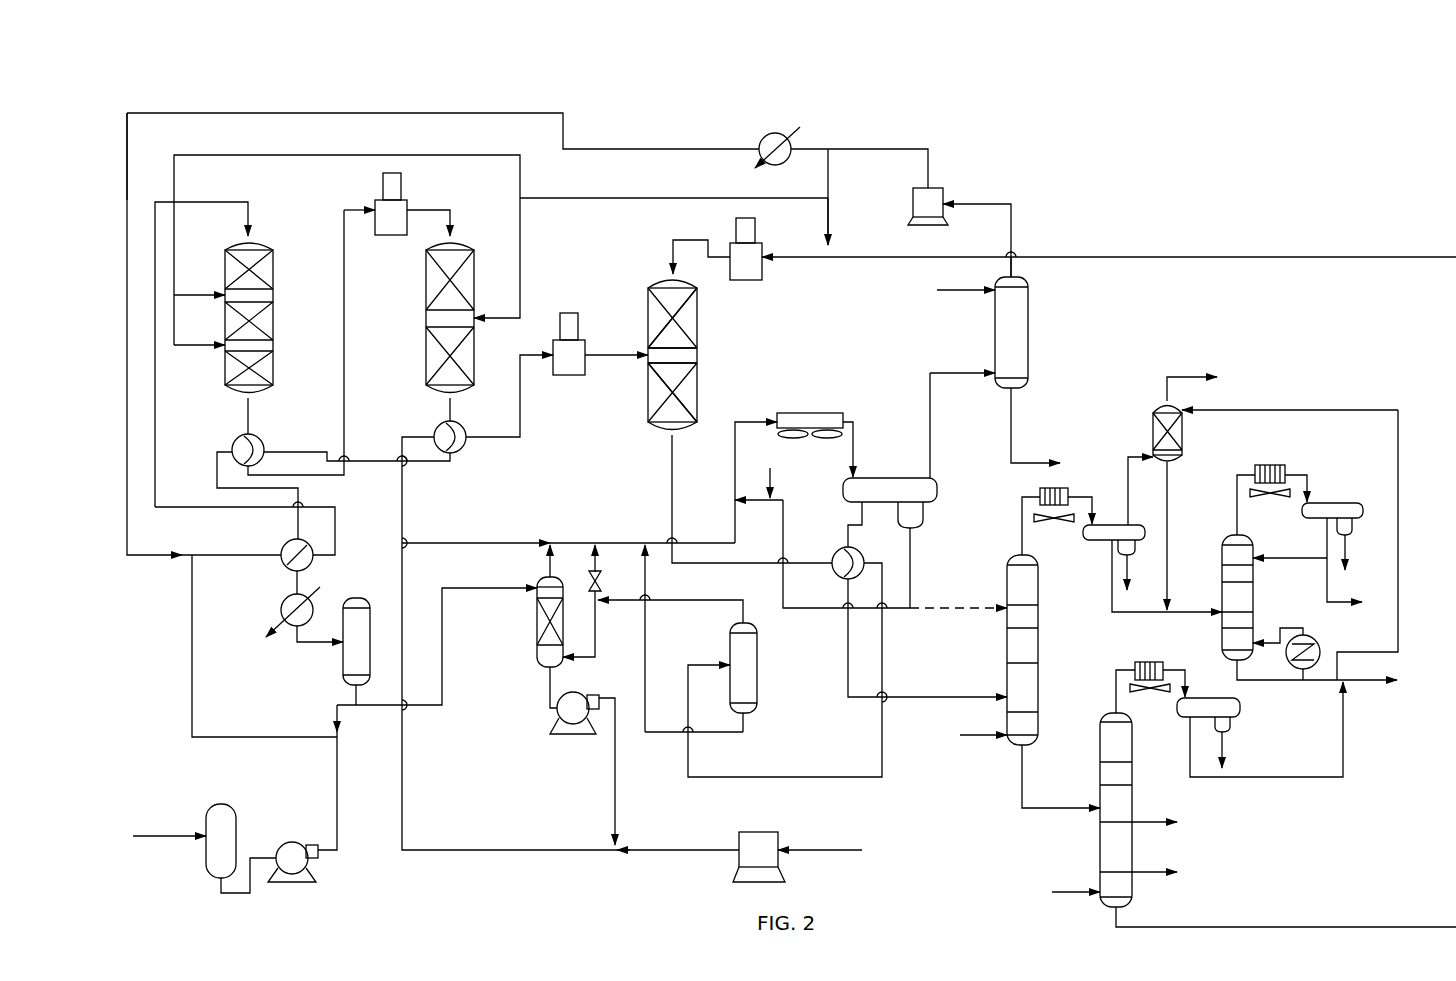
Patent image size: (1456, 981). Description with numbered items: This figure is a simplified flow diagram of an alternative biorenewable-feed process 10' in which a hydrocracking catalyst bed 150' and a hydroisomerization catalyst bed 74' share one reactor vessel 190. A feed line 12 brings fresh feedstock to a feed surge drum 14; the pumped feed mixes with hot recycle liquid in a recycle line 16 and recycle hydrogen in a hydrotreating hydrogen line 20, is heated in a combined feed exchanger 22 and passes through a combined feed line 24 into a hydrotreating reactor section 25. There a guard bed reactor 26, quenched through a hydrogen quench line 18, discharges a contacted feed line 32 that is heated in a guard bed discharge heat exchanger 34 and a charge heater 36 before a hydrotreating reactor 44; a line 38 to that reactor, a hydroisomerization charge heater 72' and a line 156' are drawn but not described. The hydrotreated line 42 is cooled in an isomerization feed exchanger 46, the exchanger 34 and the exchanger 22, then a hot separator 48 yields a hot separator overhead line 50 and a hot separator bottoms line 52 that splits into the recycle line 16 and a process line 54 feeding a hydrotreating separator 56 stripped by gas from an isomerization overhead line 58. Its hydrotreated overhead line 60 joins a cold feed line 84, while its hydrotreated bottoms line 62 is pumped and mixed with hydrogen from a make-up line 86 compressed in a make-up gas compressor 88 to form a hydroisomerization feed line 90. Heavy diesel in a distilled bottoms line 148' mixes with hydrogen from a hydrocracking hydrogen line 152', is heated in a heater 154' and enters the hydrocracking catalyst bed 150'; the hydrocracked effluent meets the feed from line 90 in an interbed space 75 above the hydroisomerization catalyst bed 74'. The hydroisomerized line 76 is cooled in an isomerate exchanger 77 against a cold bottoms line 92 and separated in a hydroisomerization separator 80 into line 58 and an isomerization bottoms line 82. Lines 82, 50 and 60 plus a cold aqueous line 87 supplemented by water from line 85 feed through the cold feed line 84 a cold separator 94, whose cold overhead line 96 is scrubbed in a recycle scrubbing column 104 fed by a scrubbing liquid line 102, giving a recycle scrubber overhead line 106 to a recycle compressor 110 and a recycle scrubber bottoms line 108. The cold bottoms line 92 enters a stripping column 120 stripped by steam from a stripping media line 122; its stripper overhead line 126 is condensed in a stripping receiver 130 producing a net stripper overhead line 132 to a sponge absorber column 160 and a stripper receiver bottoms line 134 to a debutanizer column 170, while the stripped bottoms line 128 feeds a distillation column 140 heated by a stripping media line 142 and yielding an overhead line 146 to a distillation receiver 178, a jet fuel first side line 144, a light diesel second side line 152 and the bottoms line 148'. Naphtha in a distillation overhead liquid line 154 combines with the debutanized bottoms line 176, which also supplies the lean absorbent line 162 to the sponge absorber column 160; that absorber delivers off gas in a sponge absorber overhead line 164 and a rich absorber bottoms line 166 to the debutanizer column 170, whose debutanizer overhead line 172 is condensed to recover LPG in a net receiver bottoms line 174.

The hydroprocessing unit 10' is at (569, 45).
The feed line 12 is at (142, 836).
The feed surge drum 14 is at (208, 805).
The recycle line 16 is at (348, 705).
The hydrogen quench line 18 is at (632, 198).
The hydrotreating hydrogen line 20 is at (280, 113).
The combined feed exchanger 22 is at (318, 533).
The combined feed line 24 is at (230, 560).
The hydrotreating reactor section 25 is at (196, 88).
The guard bed reactor 26 is at (260, 238).
The contacted feed line 32 is at (248, 413).
The guard bed discharge heat exchanger 34 is at (232, 452).
The charge heater 36 is at (376, 203).
The second reactor feed line 38 is at (452, 212).
The hydrotreated line 42 is at (450, 413).
The hydrotreating reactor 44 is at (426, 342).
The isomerization feed exchanger 46 is at (462, 425).
The hot separator 48 is at (343, 665).
The hot separator overhead line 50 is at (475, 543).
The hot separator bottoms line 52 is at (350, 697).
The process line 54 is at (467, 588).
The hydrotreating separator 56 is at (537, 658).
The isomerization overhead line 58 is at (708, 600).
The hydrotreated overhead line 60 is at (548, 565).
The hydrotreated bottoms line 62 is at (550, 700).
The heater 72' is at (600, 344).
The hydroisomerization catalyst bed 74' is at (647, 392).
The interbed space 75 is at (697, 360).
The hydroisomerized line 76 is at (672, 450).
The isomerate exchanger 77 is at (834, 572).
The hydroisomerization separator 80 is at (757, 665).
The isomerization bottoms line 82 is at (645, 632).
The cold feed line 84 is at (735, 487).
The water line 85 is at (772, 480).
The make-up line 86 is at (832, 850).
The cold aqueous line 87 is at (912, 560).
The make-up gas compressor 88 is at (750, 832).
The hydroisomerization feed line 90 is at (548, 850).
The cold bottoms line 92 is at (848, 528).
The cold separator 94 is at (940, 493).
The cold overhead line 96 is at (932, 460).
The scrubbing liquid line 102 is at (965, 290).
The recycle scrubbing column 104 is at (1028, 303).
The recycle scrubber overhead line 106 is at (1013, 220).
The recycle scrubber bottoms line 108 is at (1013, 412).
The recycle compressor 110 is at (913, 204).
The stripping column 120 is at (1007, 555).
The stripping media line 122 is at (960, 735).
The stripper overhead line 126 is at (1022, 542).
The stripped bottoms line 128 is at (1022, 788).
The stripping receiver 130 is at (1100, 523).
The net stripper overhead line 132 is at (1125, 457).
The stripper receiver bottoms line 134 is at (1110, 580).
The distillation column 140 is at (1100, 712).
The stripping media line 142 is at (1052, 892).
The first side line 144 is at (1150, 820).
The overhead line 146 is at (1116, 670).
The distilled bottoms line 148' is at (1286, 905).
The hydrocracking catalyst bed 150' is at (701, 324).
The second side line 152 is at (1161, 855).
The hydrocracking hydrogen line 152' is at (862, 224).
The distillation overhead liquid line 154 is at (1260, 752).
The heater 154' is at (722, 270).
The recycle hydrogen line 156' is at (1109, 280).
The sponge absorber column 160 is at (1153, 400).
The lean absorbent line 162 is at (1242, 410).
The sponge absorber overhead line 164 is at (1180, 377).
The rich absorber bottoms line 166 is at (1167, 563).
The debutanizer column 170 is at (1225, 540).
The debutanizer overhead line 172 is at (1240, 512).
The net receiver bottoms line 174 is at (1327, 578).
The debutanized bottoms line 176 is at (1290, 686).
The distillation receiver 178 is at (1200, 700).
The reactor vessel 190 is at (648, 280).